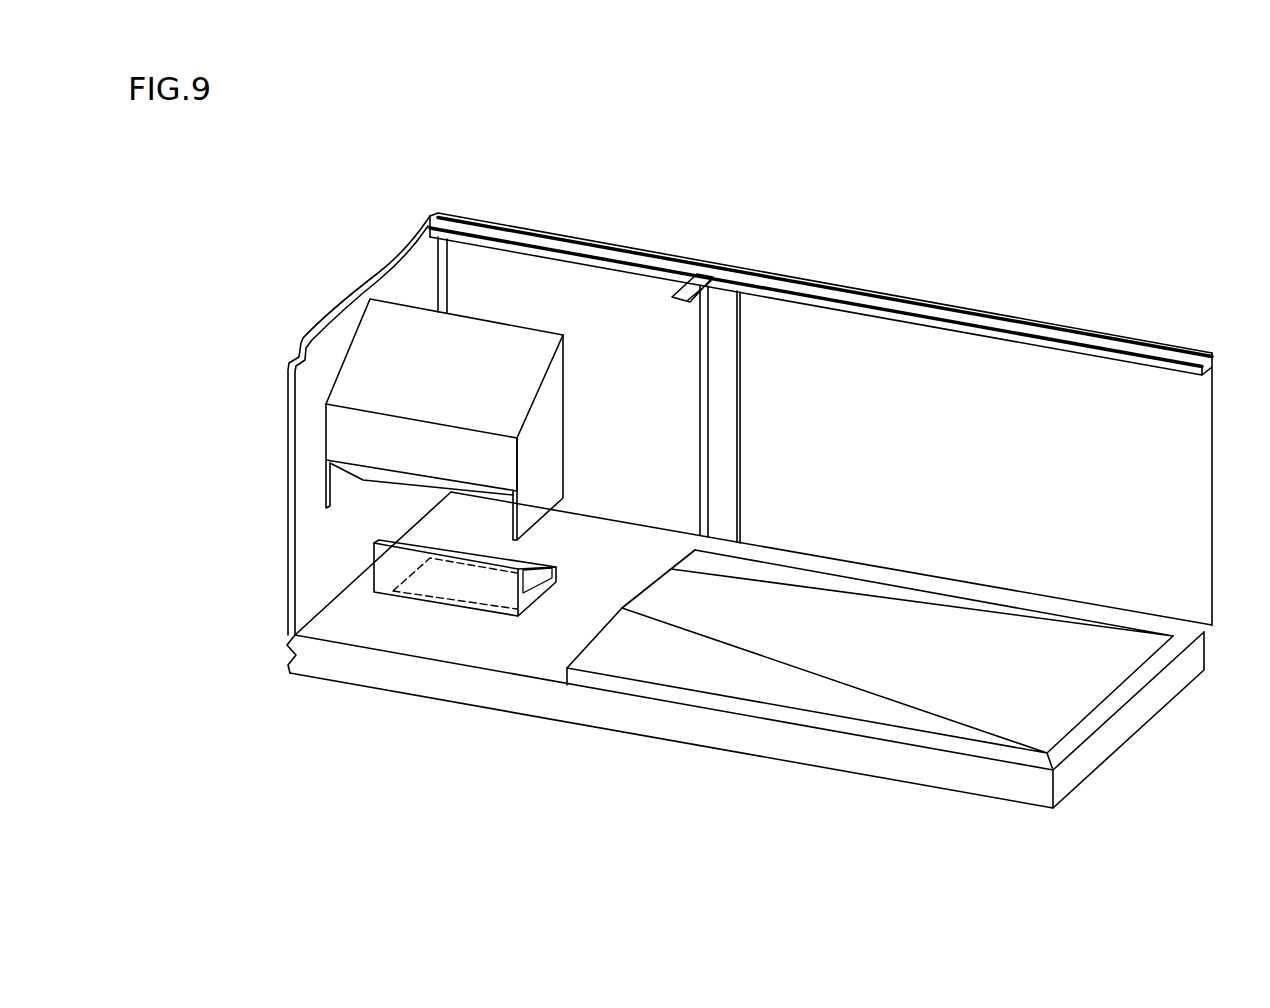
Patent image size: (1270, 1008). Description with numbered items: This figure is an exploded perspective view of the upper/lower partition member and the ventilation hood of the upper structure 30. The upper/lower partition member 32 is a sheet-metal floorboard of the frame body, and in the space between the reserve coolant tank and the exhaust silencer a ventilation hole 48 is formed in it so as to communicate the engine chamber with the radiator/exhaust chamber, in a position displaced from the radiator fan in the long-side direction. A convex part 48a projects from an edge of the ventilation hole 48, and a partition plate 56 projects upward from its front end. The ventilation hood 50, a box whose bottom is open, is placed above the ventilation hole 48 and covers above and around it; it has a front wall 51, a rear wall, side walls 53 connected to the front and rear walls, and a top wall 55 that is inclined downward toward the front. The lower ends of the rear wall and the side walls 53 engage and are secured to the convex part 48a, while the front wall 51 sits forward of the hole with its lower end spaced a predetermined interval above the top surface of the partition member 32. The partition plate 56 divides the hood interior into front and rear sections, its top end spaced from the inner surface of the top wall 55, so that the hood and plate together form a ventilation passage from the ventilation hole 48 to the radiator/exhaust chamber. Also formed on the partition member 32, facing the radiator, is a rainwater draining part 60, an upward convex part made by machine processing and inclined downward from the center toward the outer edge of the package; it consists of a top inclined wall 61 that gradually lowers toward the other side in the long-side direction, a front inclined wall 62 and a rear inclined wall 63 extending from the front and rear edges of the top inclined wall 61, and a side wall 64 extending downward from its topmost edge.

The upper structure 30 is at (1063, 305).
The upper/lower partition member 32 is at (1137, 714).
The ventilation hole 48 is at (485, 648).
The convex part 48a is at (537, 558).
The ventilation hood 50 is at (487, 426).
The front wall 51 is at (412, 448).
The side walls 53 is at (542, 448).
The top wall 55 is at (470, 348).
The partition plate 56 is at (392, 567).
The rainwater draining part 60 is at (843, 664).
The top inclined wall 61 is at (827, 655).
The front inclined wall 62 is at (737, 677).
The rear inclined wall 63 is at (743, 570).
The side wall 64 is at (632, 585).